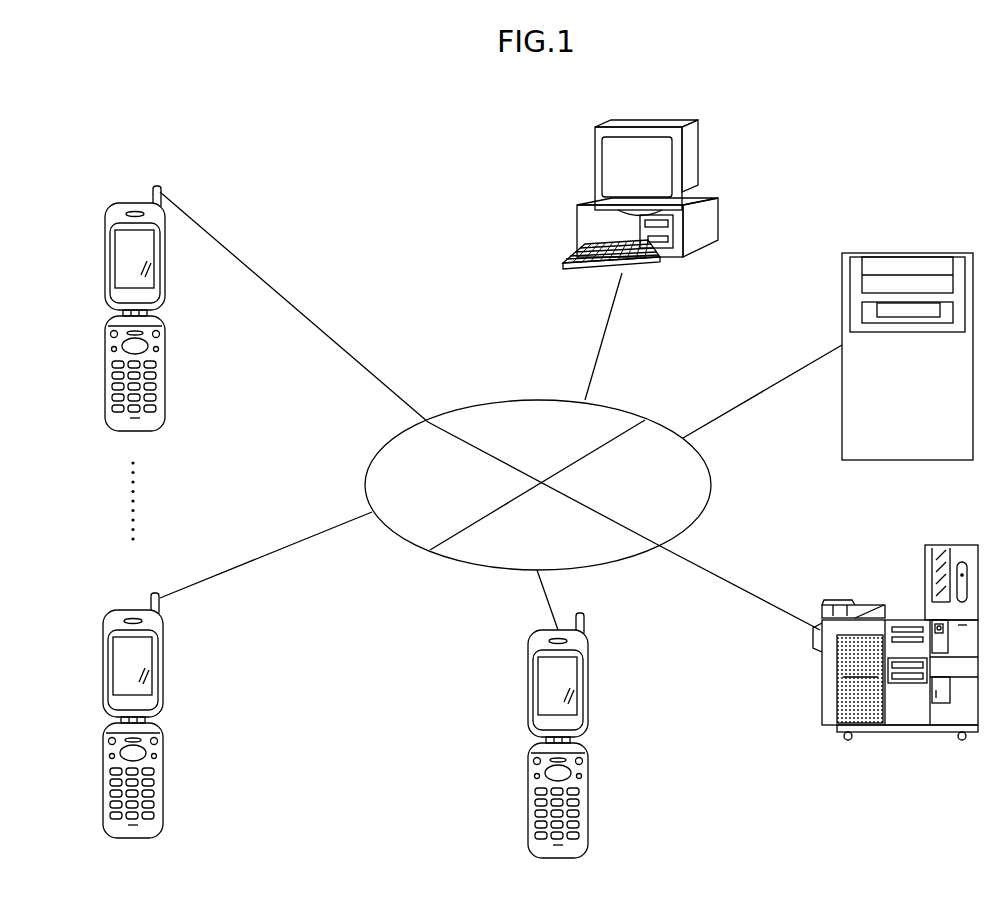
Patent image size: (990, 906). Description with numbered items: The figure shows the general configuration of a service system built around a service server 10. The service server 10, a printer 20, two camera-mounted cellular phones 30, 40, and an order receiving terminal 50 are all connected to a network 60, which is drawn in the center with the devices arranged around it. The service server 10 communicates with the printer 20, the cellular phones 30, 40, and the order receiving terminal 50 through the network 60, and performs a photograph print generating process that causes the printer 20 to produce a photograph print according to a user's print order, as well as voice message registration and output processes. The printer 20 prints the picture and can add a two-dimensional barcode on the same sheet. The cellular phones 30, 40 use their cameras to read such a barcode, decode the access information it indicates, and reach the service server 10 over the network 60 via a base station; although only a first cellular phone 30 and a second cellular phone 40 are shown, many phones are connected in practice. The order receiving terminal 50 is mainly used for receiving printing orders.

The service server 10 is at (906, 253).
The printer 20 is at (908, 732).
The cellular phone 30 is at (105, 252).
The cellular phone 40 is at (527, 688).
The order receiving terminal 50 is at (684, 121).
The network 60 is at (635, 413).